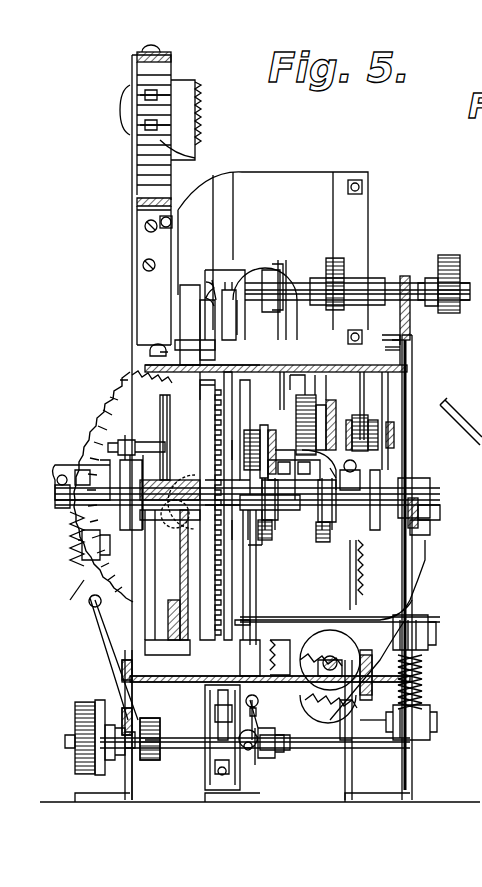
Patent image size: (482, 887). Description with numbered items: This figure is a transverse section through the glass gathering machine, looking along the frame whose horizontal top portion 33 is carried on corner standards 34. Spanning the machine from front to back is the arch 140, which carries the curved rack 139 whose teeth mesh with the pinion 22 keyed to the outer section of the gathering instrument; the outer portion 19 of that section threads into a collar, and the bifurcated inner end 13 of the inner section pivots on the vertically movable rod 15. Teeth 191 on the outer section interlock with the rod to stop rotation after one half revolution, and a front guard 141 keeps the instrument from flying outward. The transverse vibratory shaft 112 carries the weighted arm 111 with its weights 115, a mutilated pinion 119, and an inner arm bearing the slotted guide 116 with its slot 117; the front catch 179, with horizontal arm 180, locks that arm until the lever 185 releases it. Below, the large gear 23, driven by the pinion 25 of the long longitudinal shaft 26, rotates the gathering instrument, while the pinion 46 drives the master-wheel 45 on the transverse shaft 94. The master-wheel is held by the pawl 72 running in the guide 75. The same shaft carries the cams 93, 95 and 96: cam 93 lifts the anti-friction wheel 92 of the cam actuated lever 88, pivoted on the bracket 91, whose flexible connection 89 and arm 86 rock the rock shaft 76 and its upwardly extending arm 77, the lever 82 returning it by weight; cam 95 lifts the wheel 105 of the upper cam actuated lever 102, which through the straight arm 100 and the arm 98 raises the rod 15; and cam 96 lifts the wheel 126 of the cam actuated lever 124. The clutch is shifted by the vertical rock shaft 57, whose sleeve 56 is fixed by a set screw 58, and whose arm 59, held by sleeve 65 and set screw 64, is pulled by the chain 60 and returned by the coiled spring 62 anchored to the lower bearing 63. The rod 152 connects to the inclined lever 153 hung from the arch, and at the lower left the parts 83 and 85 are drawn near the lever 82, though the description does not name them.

The arch 140 is at (165, 58).
The curved rack 139 is at (200, 120).
The front guard 141 is at (240, 172).
The pawl 72 is at (172, 222).
The pinion 22 is at (213, 282).
The teeth 191 is at (226, 282).
The front catch 179 is at (280, 258).
The mutilated pinion 119 is at (336, 258).
The vibratory shaft 112 is at (376, 278).
The weighted arm 111 is at (430, 276).
The weights 115 is at (460, 281).
The slot 117 is at (200, 292).
The inner end of inner section 13 is at (200, 308).
The slotted guide 116 is at (180, 330).
The guide 75 is at (158, 348).
The corner standards 34 is at (132, 380).
The large gear 23 is at (110, 412).
The inclined lever 153 is at (160, 413).
The rod 152 is at (128, 440).
The horizontal arm 180 is at (92, 462).
The vertically movable rod 15 is at (215, 405).
The pinion 46 is at (206, 470).
The anti-friction wheel 92 is at (262, 430).
The cam actuated lever 88 is at (279, 442).
The cam actuated lever 124 is at (278, 430).
The anti-friction wheel 126 is at (314, 372).
The horizontal top portion 33 is at (398, 350).
The anti-friction wheel 105 is at (364, 420).
The upper cam actuated lever 102 is at (388, 420).
The vertical rock shaft 57 is at (414, 400).
The set screw 58 is at (440, 510).
The sleeve 56 is at (430, 528).
The lever 185 is at (92, 565).
The link 83 is at (88, 594).
The master-wheel 45 is at (198, 600).
The outer portion of outer section 19 is at (200, 530).
The transverse shaft 94 is at (298, 505).
The cam 93 is at (264, 577).
The flexible connection 89 is at (258, 592).
The cam 96 is at (320, 545).
The chain 60 is at (255, 600).
The cam 95 is at (364, 565).
The arm 59 is at (375, 618).
The set screw 64 is at (436, 630).
The sleeve 65 is at (428, 642).
The coiled spring 62 is at (426, 688).
The lower bearing 63 is at (428, 734).
The arm 98 is at (278, 660).
The long longitudinal shaft 26 is at (328, 656).
The pinion 25 is at (318, 695).
The straight arm 100 is at (256, 690).
The bracket 91 is at (205, 684).
The upwardly extending arm 77 is at (205, 712).
The rock shaft 76 is at (302, 748).
The arm 86 is at (252, 766).
The gear 85 is at (74, 720).
The lever 82 is at (112, 760).